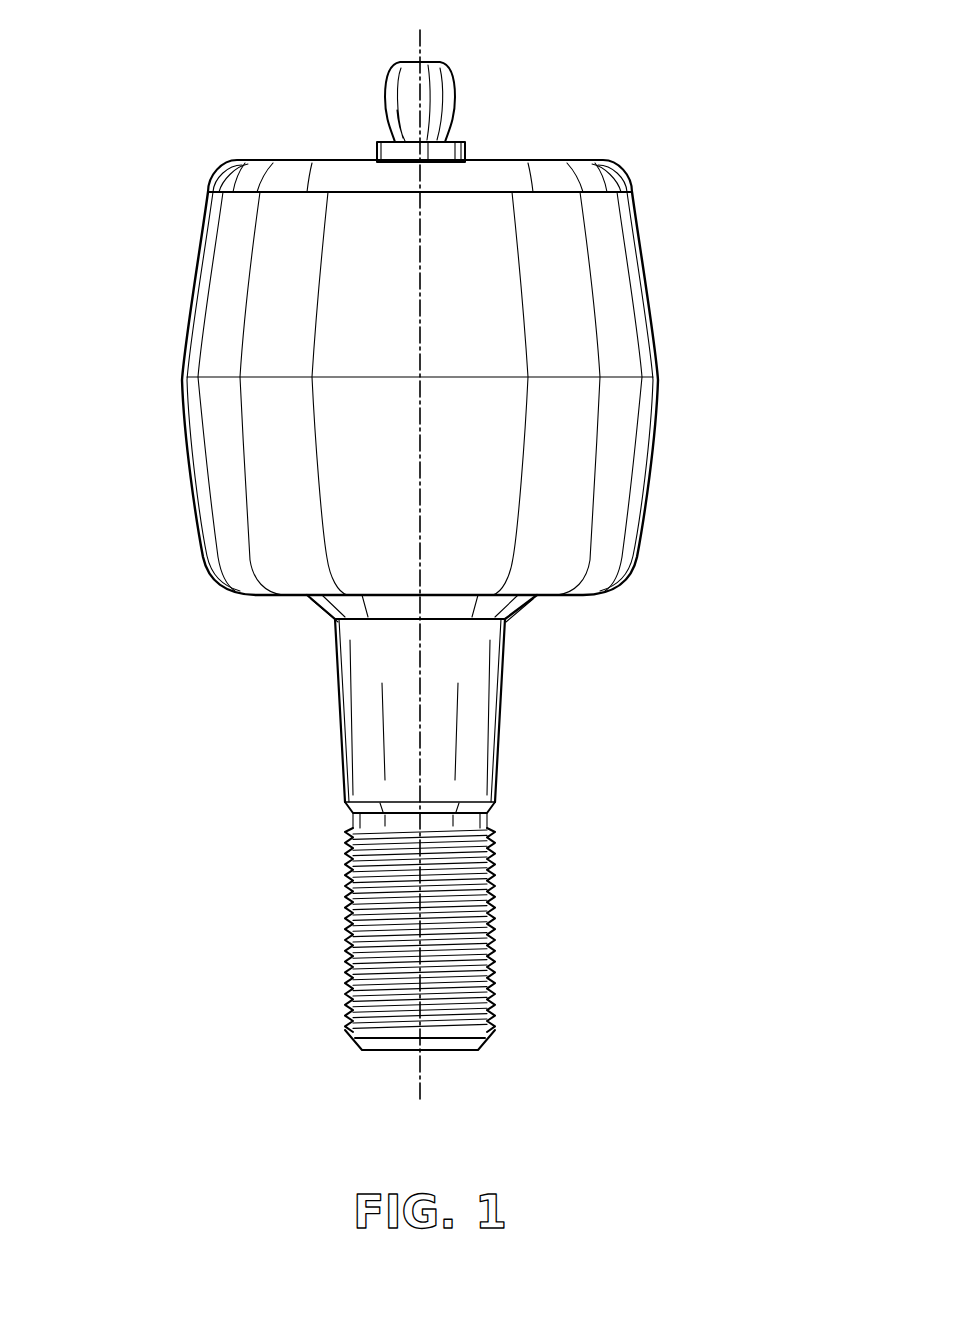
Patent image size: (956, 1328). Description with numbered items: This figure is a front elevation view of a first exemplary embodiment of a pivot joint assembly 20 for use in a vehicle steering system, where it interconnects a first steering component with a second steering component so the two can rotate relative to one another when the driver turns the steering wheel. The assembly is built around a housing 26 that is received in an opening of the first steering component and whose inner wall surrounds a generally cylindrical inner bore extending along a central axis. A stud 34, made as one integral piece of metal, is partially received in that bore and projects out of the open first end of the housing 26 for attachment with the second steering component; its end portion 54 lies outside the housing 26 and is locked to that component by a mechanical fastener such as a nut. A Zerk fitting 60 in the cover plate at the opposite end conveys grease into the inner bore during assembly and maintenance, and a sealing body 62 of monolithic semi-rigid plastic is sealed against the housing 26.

The pivot joint assembly 20 is at (652, 142).
The housing 26 is at (677, 357).
The stud 34 is at (518, 703).
The end portion 54 is at (465, 930).
The Zerk fitting 60 is at (407, 97).
The sealing body 62 is at (303, 613).